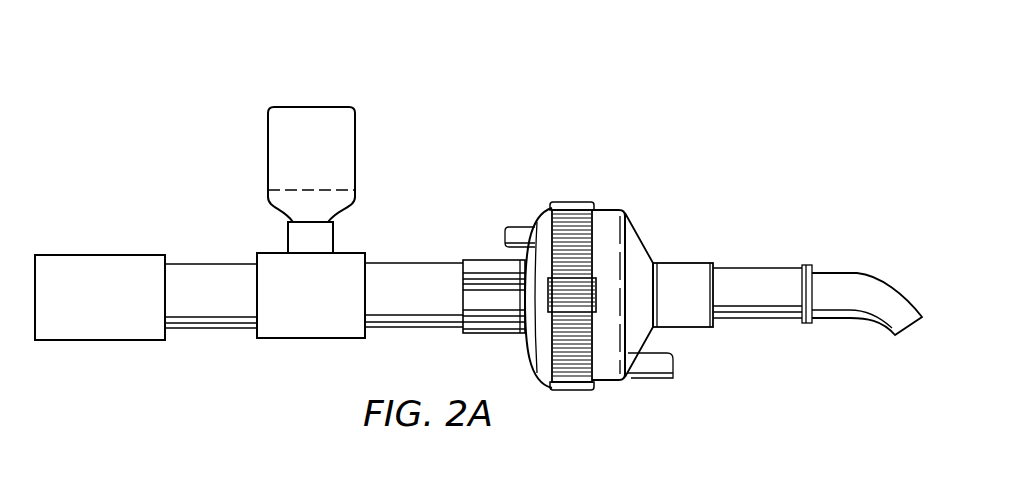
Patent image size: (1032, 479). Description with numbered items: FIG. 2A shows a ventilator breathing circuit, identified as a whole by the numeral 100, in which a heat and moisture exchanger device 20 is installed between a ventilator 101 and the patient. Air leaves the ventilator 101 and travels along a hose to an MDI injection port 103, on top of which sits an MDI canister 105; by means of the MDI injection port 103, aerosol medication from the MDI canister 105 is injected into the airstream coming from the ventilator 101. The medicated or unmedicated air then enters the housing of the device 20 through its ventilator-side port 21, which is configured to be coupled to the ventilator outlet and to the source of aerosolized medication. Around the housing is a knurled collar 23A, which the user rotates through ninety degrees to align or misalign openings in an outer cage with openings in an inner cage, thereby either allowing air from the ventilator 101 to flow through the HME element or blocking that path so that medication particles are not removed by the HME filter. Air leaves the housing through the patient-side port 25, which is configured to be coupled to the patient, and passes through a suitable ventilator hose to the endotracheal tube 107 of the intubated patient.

The ventilator circuit system 100 is at (687, 108).
The ventilator 101 is at (85, 254).
The MDI injection port 103 is at (300, 340).
The MDI canister 105 is at (268, 152).
The ventilator-side port 21 is at (480, 258).
The knurled collar 23A is at (572, 200).
The device housing 20 is at (623, 402).
The patient-side port 25 is at (682, 263).
The endotracheal tube 107 is at (867, 273).